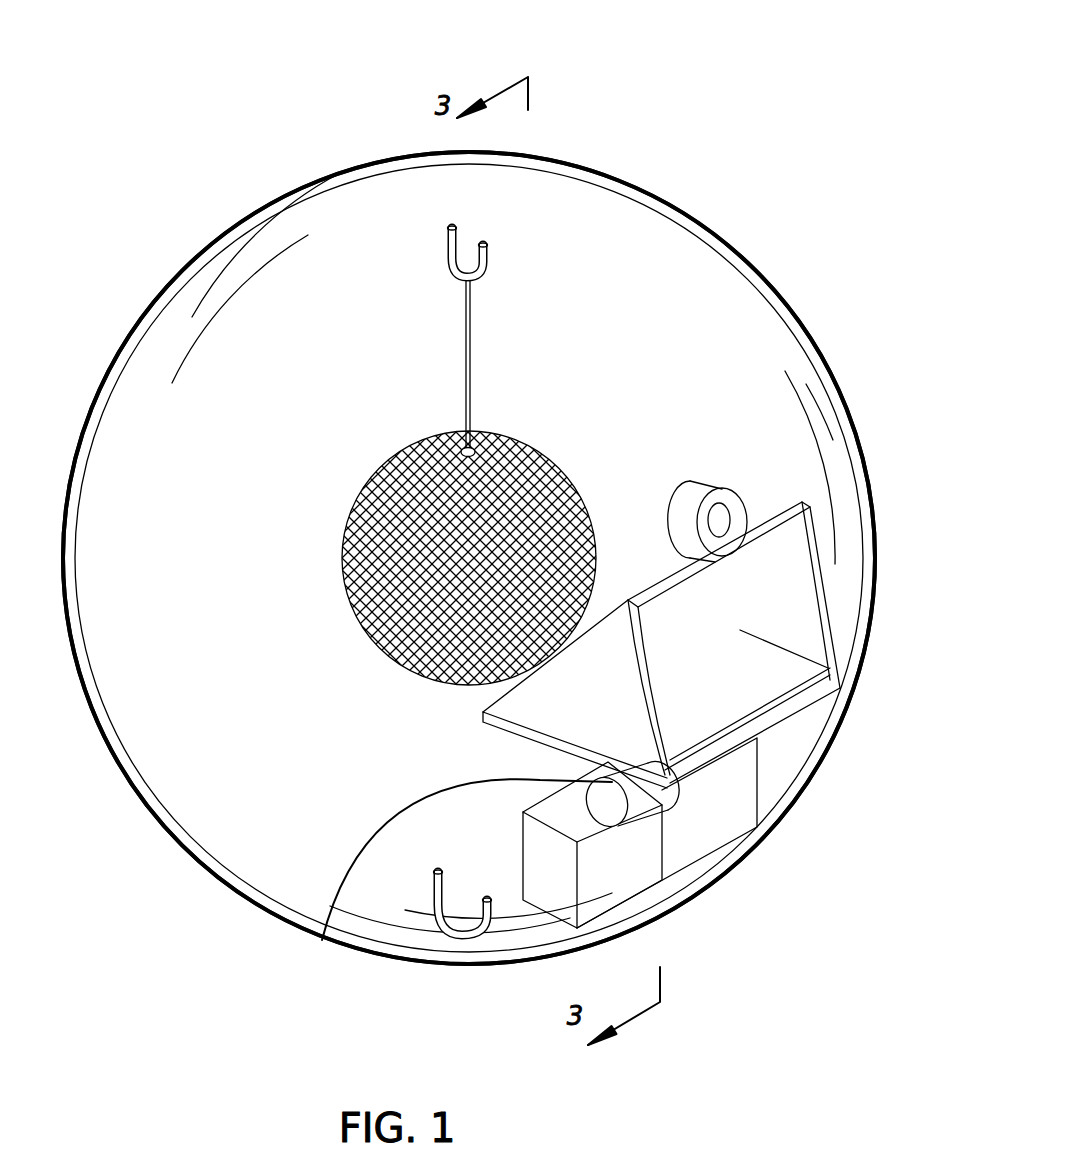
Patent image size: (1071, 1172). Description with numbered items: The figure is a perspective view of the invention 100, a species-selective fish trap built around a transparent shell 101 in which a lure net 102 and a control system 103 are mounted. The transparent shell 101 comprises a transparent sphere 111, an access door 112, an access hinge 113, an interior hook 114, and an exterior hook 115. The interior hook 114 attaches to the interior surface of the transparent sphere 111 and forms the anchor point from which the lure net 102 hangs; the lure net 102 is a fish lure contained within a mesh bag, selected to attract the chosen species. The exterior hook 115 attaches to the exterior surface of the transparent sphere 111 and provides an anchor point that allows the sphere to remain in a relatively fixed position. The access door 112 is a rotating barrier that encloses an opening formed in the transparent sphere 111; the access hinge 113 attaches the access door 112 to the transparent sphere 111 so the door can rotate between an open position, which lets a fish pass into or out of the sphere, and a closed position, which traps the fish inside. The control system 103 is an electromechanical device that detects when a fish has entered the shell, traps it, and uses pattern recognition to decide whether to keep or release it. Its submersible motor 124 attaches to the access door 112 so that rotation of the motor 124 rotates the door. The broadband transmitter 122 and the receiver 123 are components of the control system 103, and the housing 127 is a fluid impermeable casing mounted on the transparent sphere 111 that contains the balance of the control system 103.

The invention 100 is at (187, 100).
The transparent shell 101 is at (713, 225).
The transparent sphere 111 is at (240, 258).
The interior hook 114 is at (450, 243).
The lure net 102 is at (522, 443).
The broadband transmitter 122 is at (690, 492).
The receiver 123 is at (723, 512).
The access door 112 is at (755, 665).
The access hinge 113 is at (842, 688).
The control system 103 is at (763, 777).
The housing 127 is at (700, 820).
The motor 124 is at (322, 940).
The exterior hook 115 is at (477, 938).